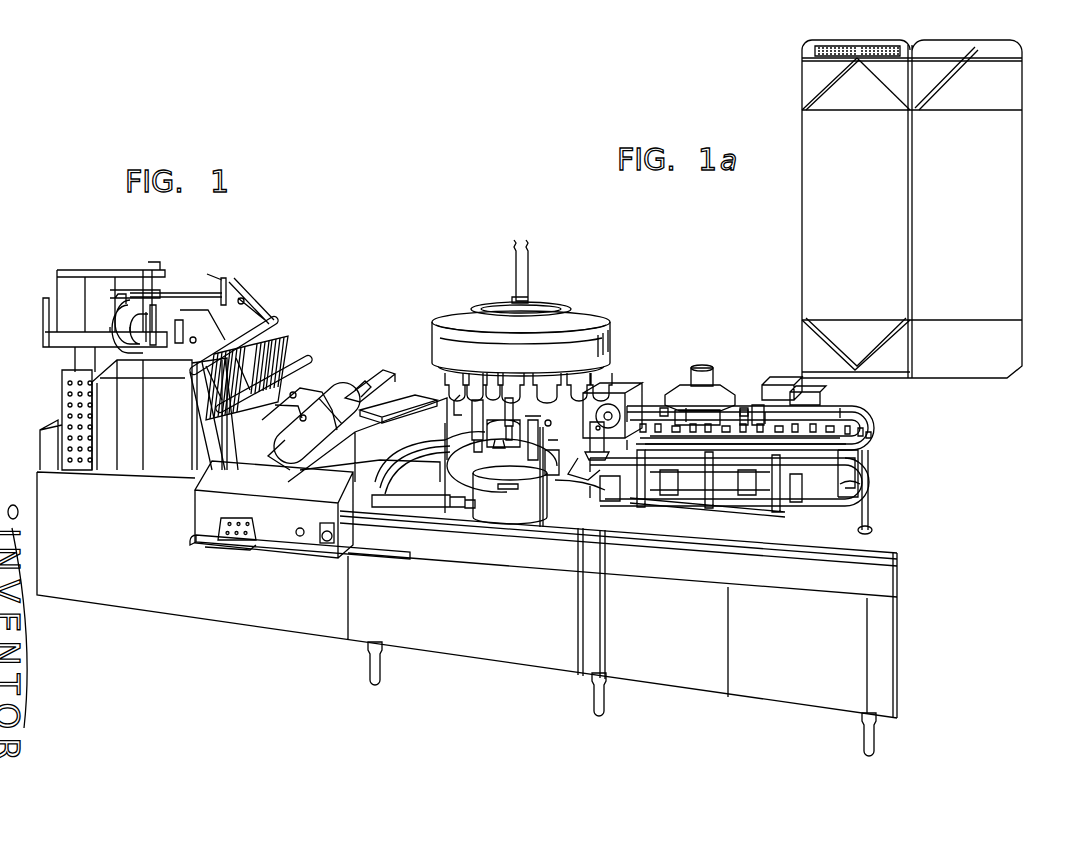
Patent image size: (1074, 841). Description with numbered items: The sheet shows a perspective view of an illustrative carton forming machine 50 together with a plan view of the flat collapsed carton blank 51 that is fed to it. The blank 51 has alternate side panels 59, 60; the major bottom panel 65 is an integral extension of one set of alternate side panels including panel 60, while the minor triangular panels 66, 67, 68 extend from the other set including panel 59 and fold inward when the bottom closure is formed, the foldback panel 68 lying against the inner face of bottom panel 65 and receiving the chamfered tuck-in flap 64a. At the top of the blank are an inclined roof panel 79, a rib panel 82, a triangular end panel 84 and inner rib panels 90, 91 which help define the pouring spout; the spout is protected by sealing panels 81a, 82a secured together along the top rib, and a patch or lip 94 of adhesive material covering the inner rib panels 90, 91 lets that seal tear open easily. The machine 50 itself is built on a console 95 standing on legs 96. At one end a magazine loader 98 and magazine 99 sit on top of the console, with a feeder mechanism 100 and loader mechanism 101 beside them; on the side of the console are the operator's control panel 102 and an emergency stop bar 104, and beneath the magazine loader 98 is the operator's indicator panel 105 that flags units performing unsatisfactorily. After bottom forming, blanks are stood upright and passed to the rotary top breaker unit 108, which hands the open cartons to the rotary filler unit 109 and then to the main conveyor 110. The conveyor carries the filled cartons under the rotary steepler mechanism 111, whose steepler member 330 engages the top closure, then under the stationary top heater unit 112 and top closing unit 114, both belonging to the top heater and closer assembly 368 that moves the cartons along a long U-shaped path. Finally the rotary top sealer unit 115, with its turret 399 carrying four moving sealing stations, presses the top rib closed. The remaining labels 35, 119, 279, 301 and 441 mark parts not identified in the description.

In FIG. 1, the carton stack holder 35 is at (240, 426).
In FIG. 1, the carton forming machine 50 is at (40, 463).
In FIG. 1, the carton blank 51 is at (236, 453).
In FIG. 1A, the carton blank 51 is at (800, 199).
In FIG. 1A, the side panel 59 is at (802, 224).
In FIG. 1A, the side panel 60 is at (1010, 222).
In FIG. 1A, the tuck-in flap 64a is at (914, 378).
In FIG. 1A, the major bottom panel 65 is at (993, 372).
In FIG. 1A, the minor triangular panel 66 is at (860, 326).
In FIG. 1A, the minor triangular panel 67 is at (808, 342).
In FIG. 1A, the triangular foldback panel 68 is at (916, 347).
In FIG. 1A, the inclined roof panel 79 is at (1012, 93).
In FIG. 1A, the sealing panel 81a is at (814, 48).
In FIG. 1A, the rib panel 82 is at (995, 50).
In FIG. 1A, the sealing panel 82a is at (934, 55).
In FIG. 1A, the triangular end panel 84 is at (872, 102).
In FIG. 1A, the inner rib panel 90 is at (810, 56).
In FIG. 1A, the inner rib panel 91 is at (904, 60).
In FIG. 1A, the patch of adhesive material 94 is at (840, 58).
In FIG. 1, the console 95 is at (100, 587).
In FIG. 1, the legs 96 is at (370, 667).
In FIG. 1, the magazine loader 98 is at (60, 306).
In FIG. 1, the magazine 99 is at (208, 406).
In FIG. 1, the feeder mechanism 100 is at (302, 397).
In FIG. 1, the loader mechanism 101 is at (370, 388).
In FIG. 1, the operator's control panel 102 is at (220, 523).
In FIG. 1, the emergency stop bar 104 is at (282, 548).
In FIG. 1, the operator's indicator panel 105 is at (62, 384).
In FIG. 1, the rotary top breaker unit 108 is at (495, 500).
In FIG. 1, the rotary filler unit 109 is at (447, 318).
In FIG. 1, the main conveyor 110 is at (832, 493).
In FIG. 1, the rotary steepler mechanism 111 is at (608, 389).
In FIG. 1, the top heater unit 112 is at (645, 406).
In FIG. 1, the top closing unit 114 is at (748, 412).
In FIG. 1, the rotary top sealer unit 115 is at (680, 384).
In FIG. 1, the magazine rail 119 is at (232, 418).
In FIG. 1, the control housing 279 is at (316, 468).
In FIG. 1, the filling head 301 is at (492, 400).
In FIG. 1, the steepler member 330 is at (567, 440).
In FIG. 1, the top heater and closer assembly 368 is at (860, 405).
In FIG. 1, the turret 399 is at (722, 380).
In FIG. 1, the top folding block 441 is at (780, 382).